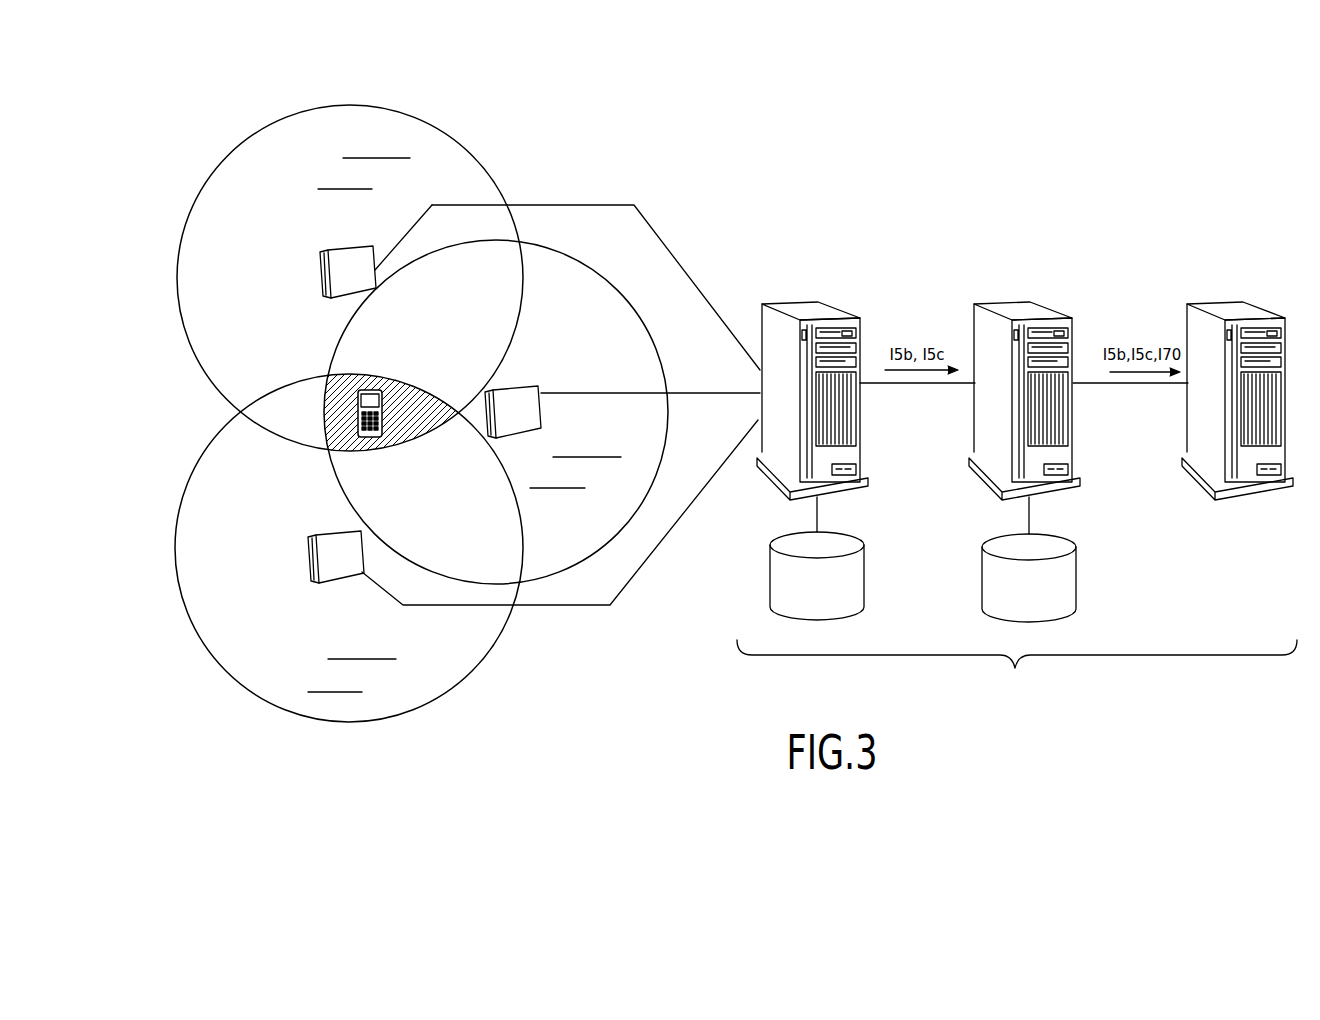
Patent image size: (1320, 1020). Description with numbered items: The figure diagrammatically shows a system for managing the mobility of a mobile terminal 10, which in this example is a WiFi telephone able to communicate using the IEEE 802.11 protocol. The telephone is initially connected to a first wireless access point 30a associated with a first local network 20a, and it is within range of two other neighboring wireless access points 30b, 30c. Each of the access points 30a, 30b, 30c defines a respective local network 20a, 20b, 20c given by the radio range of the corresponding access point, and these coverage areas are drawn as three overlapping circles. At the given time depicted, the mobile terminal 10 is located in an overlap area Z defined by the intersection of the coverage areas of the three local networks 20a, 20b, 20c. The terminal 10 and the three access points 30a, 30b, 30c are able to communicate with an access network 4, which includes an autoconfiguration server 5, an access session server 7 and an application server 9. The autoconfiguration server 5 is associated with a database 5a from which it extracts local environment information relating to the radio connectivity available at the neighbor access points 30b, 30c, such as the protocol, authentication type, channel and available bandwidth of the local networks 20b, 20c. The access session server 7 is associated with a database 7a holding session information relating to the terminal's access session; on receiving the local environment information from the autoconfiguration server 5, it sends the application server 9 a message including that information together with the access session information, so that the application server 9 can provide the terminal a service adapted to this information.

The first local network 20a is at (603, 274).
The local network 20b is at (357, 105).
The local network 20c is at (343, 723).
The first wireless access point 30a is at (527, 392).
The wireless access point 30b is at (349, 258).
The wireless access point 30c is at (338, 572).
The mobile terminal 10 is at (371, 392).
The overlap area Z is at (404, 402).
The autoconfiguration server 5 is at (801, 306).
The access session server 7 is at (1016, 308).
The application server 9 is at (1226, 310).
The database 5a is at (770, 575).
The database 7a is at (982, 577).
The access network 4 is at (1017, 670).